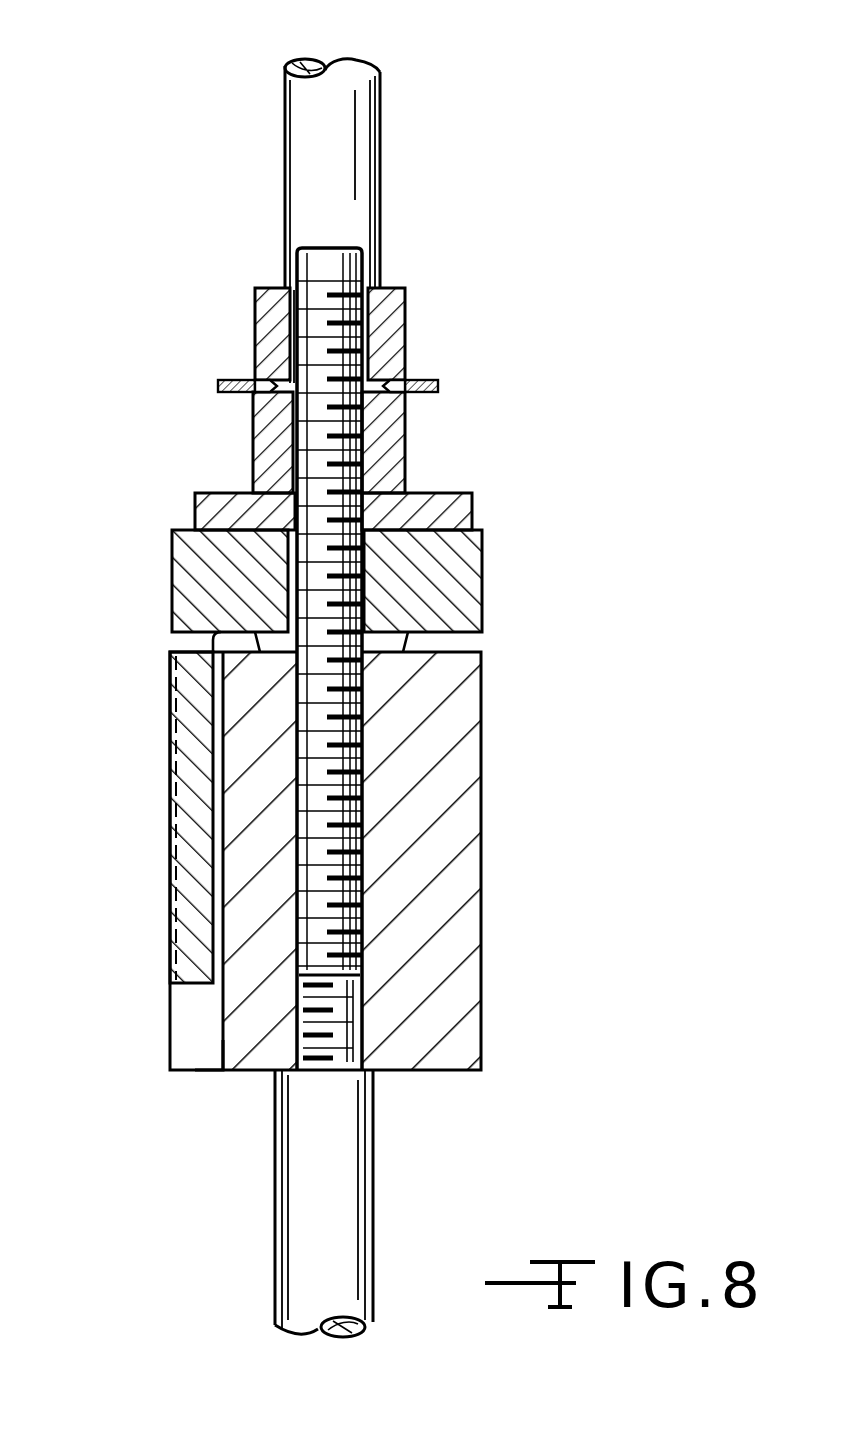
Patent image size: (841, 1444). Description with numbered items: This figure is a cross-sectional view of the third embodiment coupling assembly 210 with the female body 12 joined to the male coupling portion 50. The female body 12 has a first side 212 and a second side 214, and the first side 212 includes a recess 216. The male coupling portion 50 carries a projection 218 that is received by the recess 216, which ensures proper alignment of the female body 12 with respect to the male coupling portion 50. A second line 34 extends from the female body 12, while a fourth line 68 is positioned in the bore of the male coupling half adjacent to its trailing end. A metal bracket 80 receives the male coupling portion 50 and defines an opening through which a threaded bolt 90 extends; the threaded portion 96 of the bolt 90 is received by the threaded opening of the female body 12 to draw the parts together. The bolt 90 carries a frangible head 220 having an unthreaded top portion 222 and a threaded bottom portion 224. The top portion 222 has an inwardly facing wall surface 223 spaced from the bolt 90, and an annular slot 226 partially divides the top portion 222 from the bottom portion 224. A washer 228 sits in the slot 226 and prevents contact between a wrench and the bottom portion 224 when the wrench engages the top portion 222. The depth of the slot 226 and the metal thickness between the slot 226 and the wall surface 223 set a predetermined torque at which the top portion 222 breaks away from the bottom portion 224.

The third embodiment coupling assembly 210 is at (572, 110).
The fourth line 68 is at (380, 96).
The threaded bolt 90 is at (446, 623).
The threaded portion 96 is at (362, 728).
The inwardly facing wall surface 223 is at (255, 325).
The annular slot 226 is at (257, 393).
The washer 228 is at (227, 380).
The frangible head 220 is at (405, 300).
The unthreaded top portion 222 is at (405, 338).
The threaded bottom portion 224 is at (405, 433).
The bracket 80 is at (472, 493).
The male coupling portion 50 is at (482, 575).
The female body 12 is at (323, 893).
The second side 214 is at (481, 800).
The recess 216 is at (188, 1018).
The projection 218 is at (170, 823).
The first side 212 is at (218, 1050).
The second line 34 is at (288, 1216).